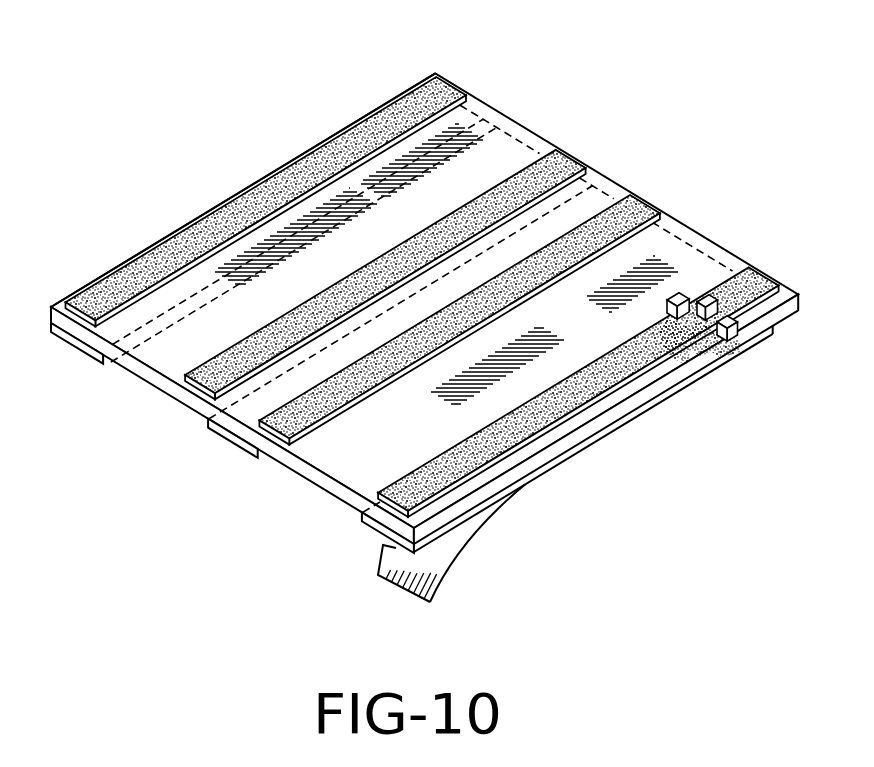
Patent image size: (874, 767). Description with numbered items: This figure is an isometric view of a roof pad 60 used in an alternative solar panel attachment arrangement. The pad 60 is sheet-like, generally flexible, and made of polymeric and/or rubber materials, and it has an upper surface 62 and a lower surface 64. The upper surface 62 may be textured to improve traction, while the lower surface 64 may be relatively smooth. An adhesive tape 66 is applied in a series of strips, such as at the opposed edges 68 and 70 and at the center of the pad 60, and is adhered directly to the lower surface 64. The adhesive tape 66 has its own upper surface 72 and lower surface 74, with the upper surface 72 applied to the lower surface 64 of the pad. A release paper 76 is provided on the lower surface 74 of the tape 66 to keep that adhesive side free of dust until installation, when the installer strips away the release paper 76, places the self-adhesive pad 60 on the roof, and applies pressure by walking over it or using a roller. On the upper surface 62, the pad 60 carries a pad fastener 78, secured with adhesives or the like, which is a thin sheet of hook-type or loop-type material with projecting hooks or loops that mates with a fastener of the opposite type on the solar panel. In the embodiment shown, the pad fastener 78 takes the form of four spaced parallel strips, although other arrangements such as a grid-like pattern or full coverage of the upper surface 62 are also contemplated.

The roof pad 60 is at (424, 282).
The upper surface 62 is at (582, 208).
The lower surface 64 is at (167, 393).
The adhesive tape 66 is at (82, 350).
The edge 68 is at (132, 258).
The edge 70 is at (588, 434).
The upper surface of adhesive tape 72 is at (700, 349).
The lower surface of adhesive tape 74 is at (461, 525).
The release paper 76 is at (438, 582).
The pad fastener 78 is at (443, 80).